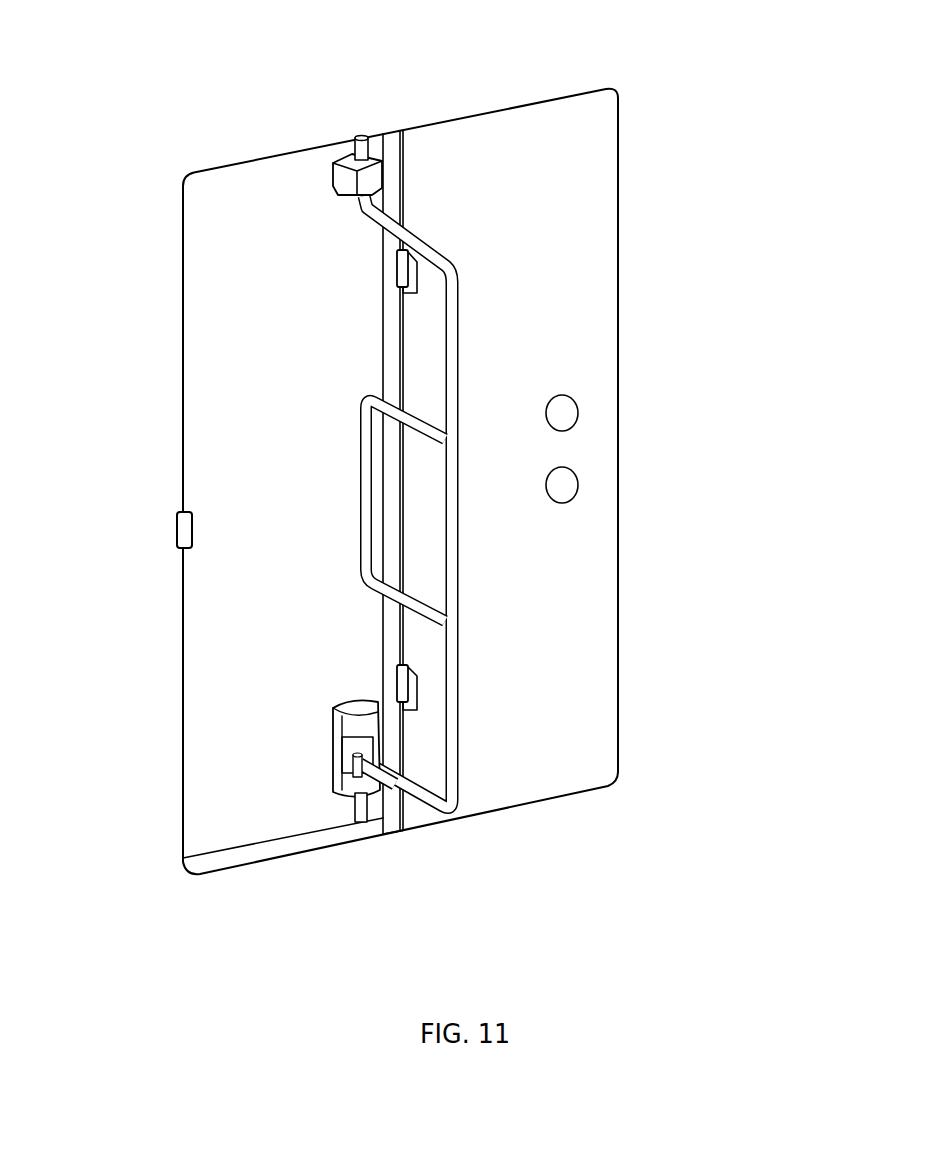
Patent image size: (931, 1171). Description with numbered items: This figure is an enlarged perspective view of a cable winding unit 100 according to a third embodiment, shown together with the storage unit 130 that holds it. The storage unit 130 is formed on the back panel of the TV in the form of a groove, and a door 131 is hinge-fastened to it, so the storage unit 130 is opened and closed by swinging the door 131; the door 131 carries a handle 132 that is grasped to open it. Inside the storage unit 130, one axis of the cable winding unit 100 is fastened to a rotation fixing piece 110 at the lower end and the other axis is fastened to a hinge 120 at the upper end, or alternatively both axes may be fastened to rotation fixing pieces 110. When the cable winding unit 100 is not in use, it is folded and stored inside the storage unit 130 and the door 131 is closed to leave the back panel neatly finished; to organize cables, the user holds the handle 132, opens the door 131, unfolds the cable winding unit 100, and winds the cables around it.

The cable winding unit 100 is at (477, 572).
The rotation fixing piece 110 is at (320, 755).
The hinge 120 is at (336, 168).
The storage unit 130 is at (238, 302).
The door 131 is at (583, 302).
The handle 132 is at (557, 483).